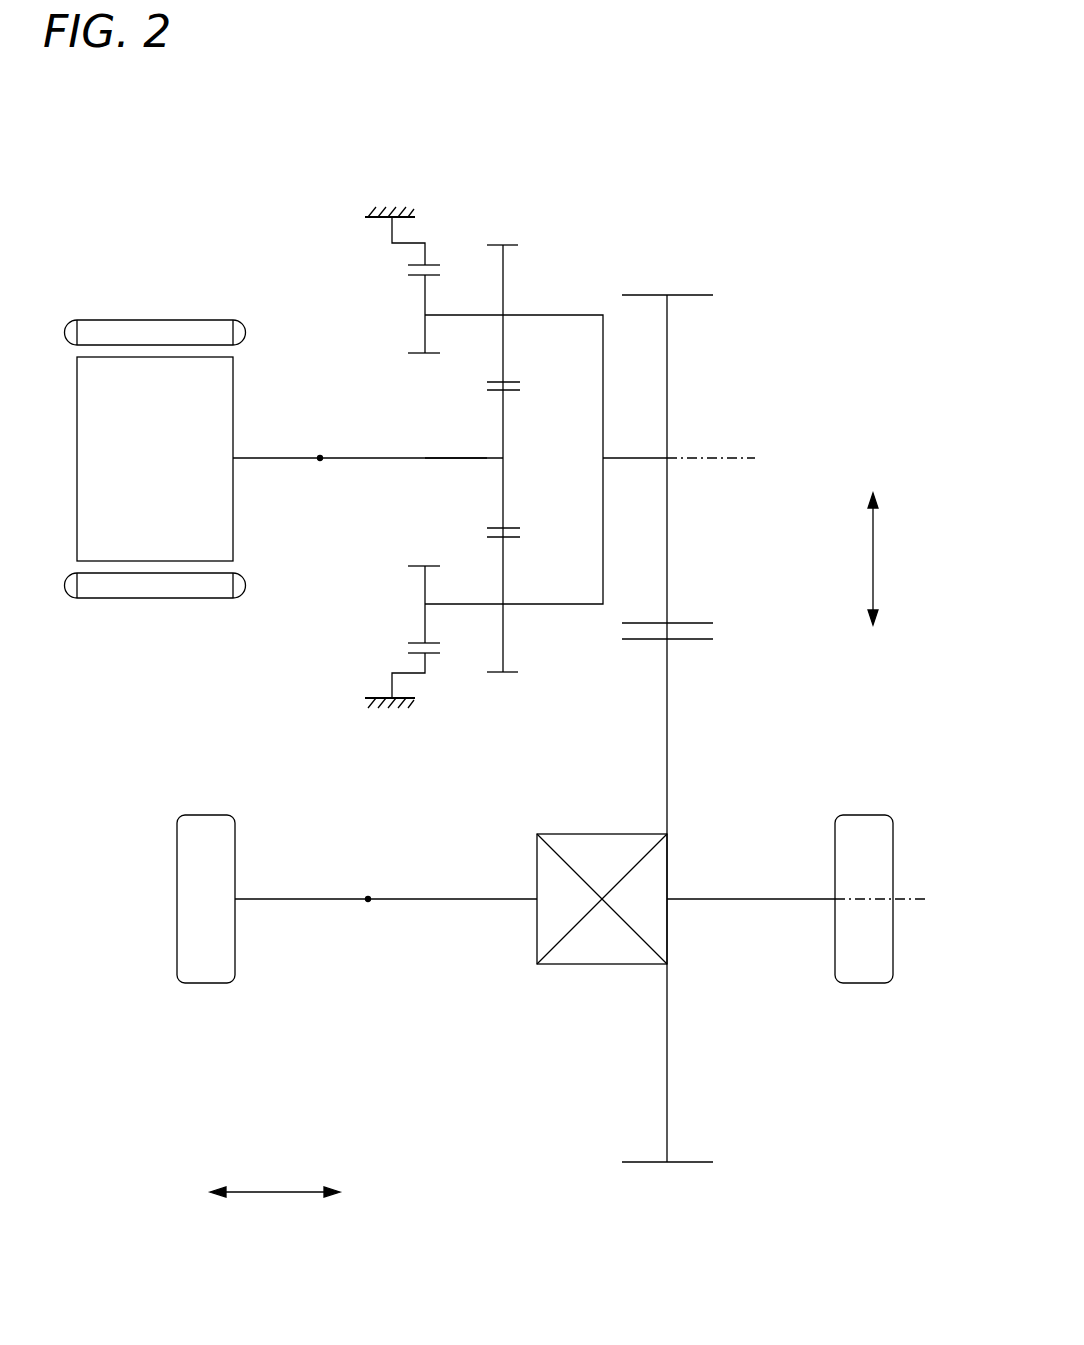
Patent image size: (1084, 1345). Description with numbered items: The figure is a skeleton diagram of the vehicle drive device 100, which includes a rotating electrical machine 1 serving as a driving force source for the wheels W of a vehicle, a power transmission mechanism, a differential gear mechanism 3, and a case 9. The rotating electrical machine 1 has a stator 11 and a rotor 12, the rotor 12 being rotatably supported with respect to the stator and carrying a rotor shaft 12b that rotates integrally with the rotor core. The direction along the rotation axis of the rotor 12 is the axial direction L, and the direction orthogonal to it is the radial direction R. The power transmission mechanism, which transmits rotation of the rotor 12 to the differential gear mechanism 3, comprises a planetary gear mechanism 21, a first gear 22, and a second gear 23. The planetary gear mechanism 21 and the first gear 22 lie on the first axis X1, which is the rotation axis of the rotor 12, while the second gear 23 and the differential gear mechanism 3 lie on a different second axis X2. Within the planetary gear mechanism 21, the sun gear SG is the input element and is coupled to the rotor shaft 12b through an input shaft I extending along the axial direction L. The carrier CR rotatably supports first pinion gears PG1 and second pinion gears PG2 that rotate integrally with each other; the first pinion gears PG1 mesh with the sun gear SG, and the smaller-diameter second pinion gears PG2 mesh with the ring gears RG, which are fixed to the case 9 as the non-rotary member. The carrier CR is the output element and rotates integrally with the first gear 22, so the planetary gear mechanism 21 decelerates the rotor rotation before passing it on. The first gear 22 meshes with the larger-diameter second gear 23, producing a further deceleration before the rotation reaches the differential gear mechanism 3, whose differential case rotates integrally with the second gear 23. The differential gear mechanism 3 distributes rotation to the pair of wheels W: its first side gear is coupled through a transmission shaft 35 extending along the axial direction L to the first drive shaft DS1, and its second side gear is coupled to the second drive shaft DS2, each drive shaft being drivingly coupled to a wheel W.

The vehicle drive device 100 is at (176, 108).
The rotating electrical machine 1 is at (166, 636).
The stator 11 is at (160, 325).
The rotor 12 is at (228, 525).
The rotor shaft 12b is at (257, 455).
The case 9 is at (392, 205).
The planetary gear mechanism 21 is at (582, 206).
The first gear 22 is at (688, 293).
The second gear 23 is at (682, 1165).
The differential gear mechanism 3 is at (585, 955).
The transmission shaft 35 is at (452, 900).
The ring gear RG is at (432, 265).
The first pinion gear PG1 is at (510, 243).
The second pinion gear PG2 is at (430, 358).
The sun gear SG is at (510, 525).
The carrier CR is at (545, 608).
The input shaft I is at (440, 466).
The first axis X1 is at (696, 460).
The second axis X2 is at (898, 900).
The first drive shaft DS1 is at (308, 900).
The second drive shaft DS2 is at (752, 900).
The wheel W is at (205, 975).
The radial direction R is at (882, 559).
The axial direction L is at (273, 1186).